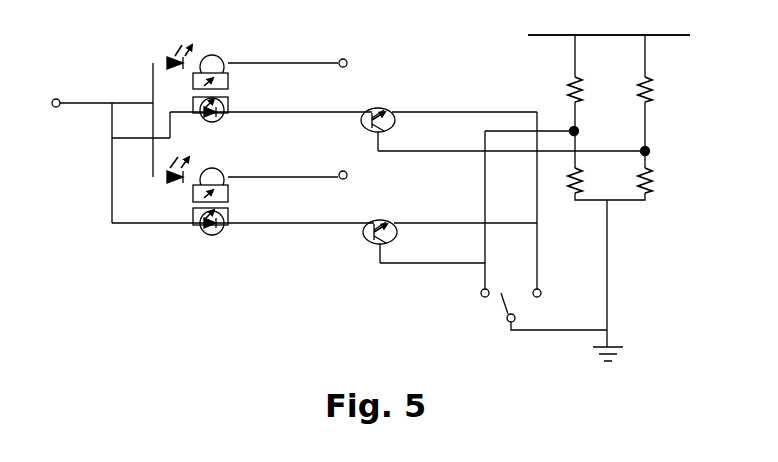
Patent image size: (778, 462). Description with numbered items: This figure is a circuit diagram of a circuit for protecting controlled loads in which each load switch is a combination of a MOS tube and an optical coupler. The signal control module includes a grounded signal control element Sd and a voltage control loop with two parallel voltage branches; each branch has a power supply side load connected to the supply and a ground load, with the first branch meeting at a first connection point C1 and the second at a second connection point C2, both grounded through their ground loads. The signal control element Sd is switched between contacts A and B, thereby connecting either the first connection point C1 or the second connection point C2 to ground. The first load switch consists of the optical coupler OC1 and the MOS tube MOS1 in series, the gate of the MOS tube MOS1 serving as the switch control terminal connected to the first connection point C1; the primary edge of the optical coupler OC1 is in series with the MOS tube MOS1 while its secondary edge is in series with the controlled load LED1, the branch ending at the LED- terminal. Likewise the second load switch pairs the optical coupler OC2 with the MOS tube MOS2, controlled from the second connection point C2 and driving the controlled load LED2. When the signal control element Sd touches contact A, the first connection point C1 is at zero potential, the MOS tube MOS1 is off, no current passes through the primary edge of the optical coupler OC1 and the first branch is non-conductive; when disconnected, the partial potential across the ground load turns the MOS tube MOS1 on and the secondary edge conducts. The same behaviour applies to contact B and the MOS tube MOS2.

The LED negative terminal LED- is at (323, 111).
The controlled load LED1 is at (164, 181).
The second light emitting diode LED2 is at (157, 56).
The optical coupler OC1 is at (213, 217).
The second optocoupler OC2 is at (217, 77).
The MOS tube MOS1 is at (363, 244).
The MOS tube MOS2 is at (377, 110).
The first connection point C1 is at (587, 132).
The second connection point C2 is at (658, 152).
The contact A is at (475, 293).
The contact B is at (547, 297).
The signal control element Sd is at (500, 317).